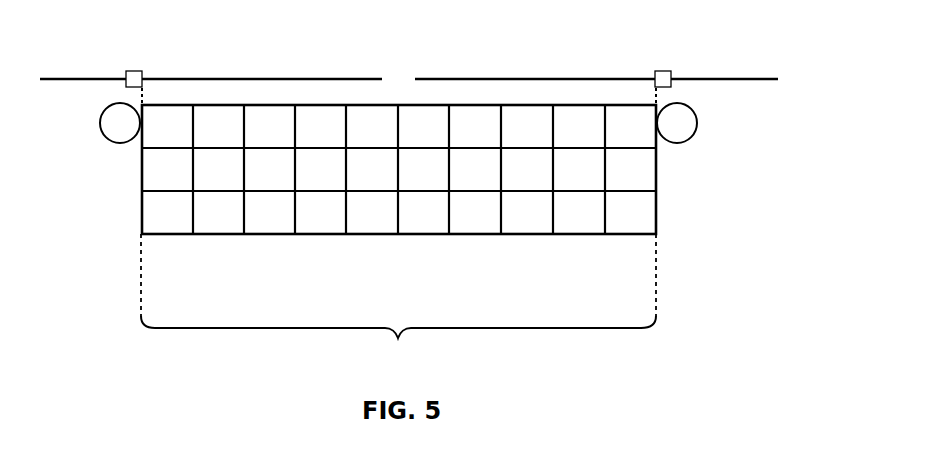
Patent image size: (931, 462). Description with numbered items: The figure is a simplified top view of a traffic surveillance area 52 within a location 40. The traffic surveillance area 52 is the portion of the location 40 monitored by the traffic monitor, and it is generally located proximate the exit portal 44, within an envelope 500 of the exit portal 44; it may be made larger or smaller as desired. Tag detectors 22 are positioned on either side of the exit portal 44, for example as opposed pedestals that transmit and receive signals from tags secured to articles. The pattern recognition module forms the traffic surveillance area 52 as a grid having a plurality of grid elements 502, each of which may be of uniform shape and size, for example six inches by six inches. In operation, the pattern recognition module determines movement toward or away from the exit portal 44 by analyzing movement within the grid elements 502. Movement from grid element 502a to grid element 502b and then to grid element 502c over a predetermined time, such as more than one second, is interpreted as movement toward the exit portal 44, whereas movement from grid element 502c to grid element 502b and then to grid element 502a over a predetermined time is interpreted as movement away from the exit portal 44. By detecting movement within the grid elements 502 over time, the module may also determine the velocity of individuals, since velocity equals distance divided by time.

The tag detector 22 is at (100, 121).
The location 40 is at (437, 175).
The exit portal 44 is at (472, 79).
The traffic surveillance area 52 is at (390, 175).
The envelope 500 is at (390, 203).
The grid element 502 is at (168, 226).
The grid element 502a is at (280, 216).
The grid element 502b is at (285, 173).
The grid element 502c is at (275, 120).